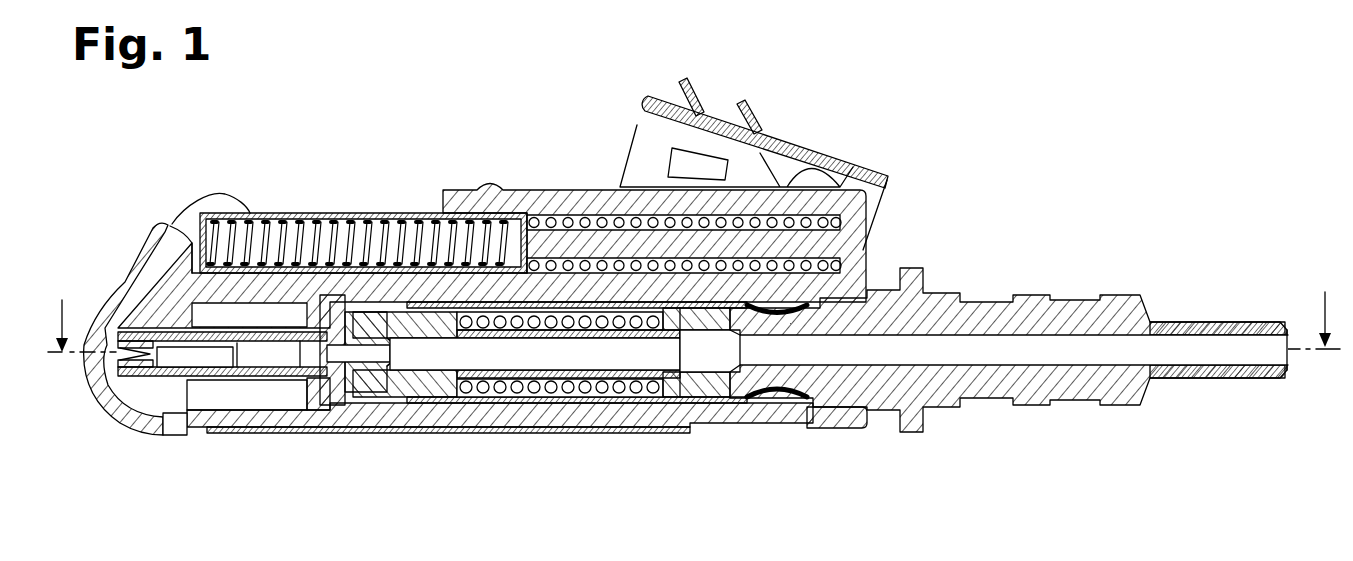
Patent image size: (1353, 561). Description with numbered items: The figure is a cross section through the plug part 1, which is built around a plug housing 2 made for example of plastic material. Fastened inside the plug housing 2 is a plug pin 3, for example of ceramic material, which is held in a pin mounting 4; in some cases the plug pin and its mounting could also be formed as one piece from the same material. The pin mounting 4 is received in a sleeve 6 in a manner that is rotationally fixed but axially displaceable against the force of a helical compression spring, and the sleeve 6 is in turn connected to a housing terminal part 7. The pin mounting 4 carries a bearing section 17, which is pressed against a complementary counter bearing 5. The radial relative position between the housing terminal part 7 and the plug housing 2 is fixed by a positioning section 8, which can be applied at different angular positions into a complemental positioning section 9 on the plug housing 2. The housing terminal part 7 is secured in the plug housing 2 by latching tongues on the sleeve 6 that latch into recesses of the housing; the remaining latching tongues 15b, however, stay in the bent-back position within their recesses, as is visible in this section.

The plug part 1 is at (388, 86).
The plug housing 2 is at (262, 413).
The plug pin 3 is at (167, 385).
The pin mounting 4 is at (392, 393).
The counter bearing 5 is at (315, 408).
The sleeve 6 is at (592, 400).
The housing terminal part 7 is at (953, 390).
The positioning section 8 is at (847, 387).
The complemental positioning section 9 is at (823, 413).
The latching tongues 15b is at (762, 398).
The bearing section 17 is at (340, 318).